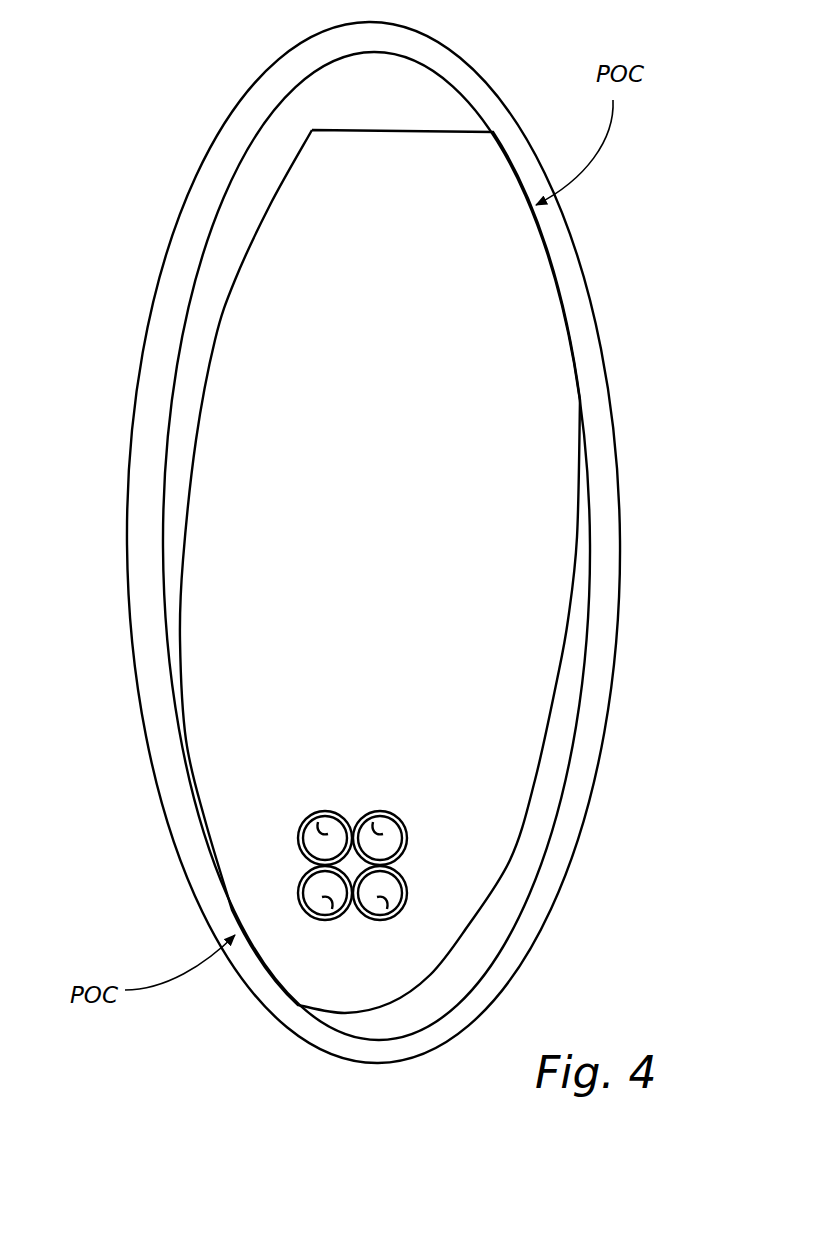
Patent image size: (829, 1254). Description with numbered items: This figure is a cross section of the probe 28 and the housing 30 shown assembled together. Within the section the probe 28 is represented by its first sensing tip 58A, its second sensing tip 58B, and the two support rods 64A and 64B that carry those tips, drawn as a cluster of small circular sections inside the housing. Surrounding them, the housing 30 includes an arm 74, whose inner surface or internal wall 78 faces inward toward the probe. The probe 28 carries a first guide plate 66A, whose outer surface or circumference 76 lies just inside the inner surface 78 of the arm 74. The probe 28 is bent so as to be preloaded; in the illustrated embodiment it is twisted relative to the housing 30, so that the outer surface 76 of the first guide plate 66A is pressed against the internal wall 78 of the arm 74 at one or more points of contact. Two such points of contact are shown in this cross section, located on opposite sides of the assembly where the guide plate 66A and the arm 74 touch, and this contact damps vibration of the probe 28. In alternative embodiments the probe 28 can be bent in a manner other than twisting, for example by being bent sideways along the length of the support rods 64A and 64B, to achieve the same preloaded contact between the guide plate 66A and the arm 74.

The housing 30 is at (393, 542).
The arm 74 is at (595, 413).
The inner surface 78 is at (178, 364).
The outer surface 76 is at (238, 267).
The first guide plate 66A is at (454, 571).
The probe 28 is at (474, 867).
The first sensing tip 58A is at (320, 822).
The second sensing tip 58B is at (380, 822).
The support rod 64A is at (320, 910).
The support rod 64B is at (380, 910).